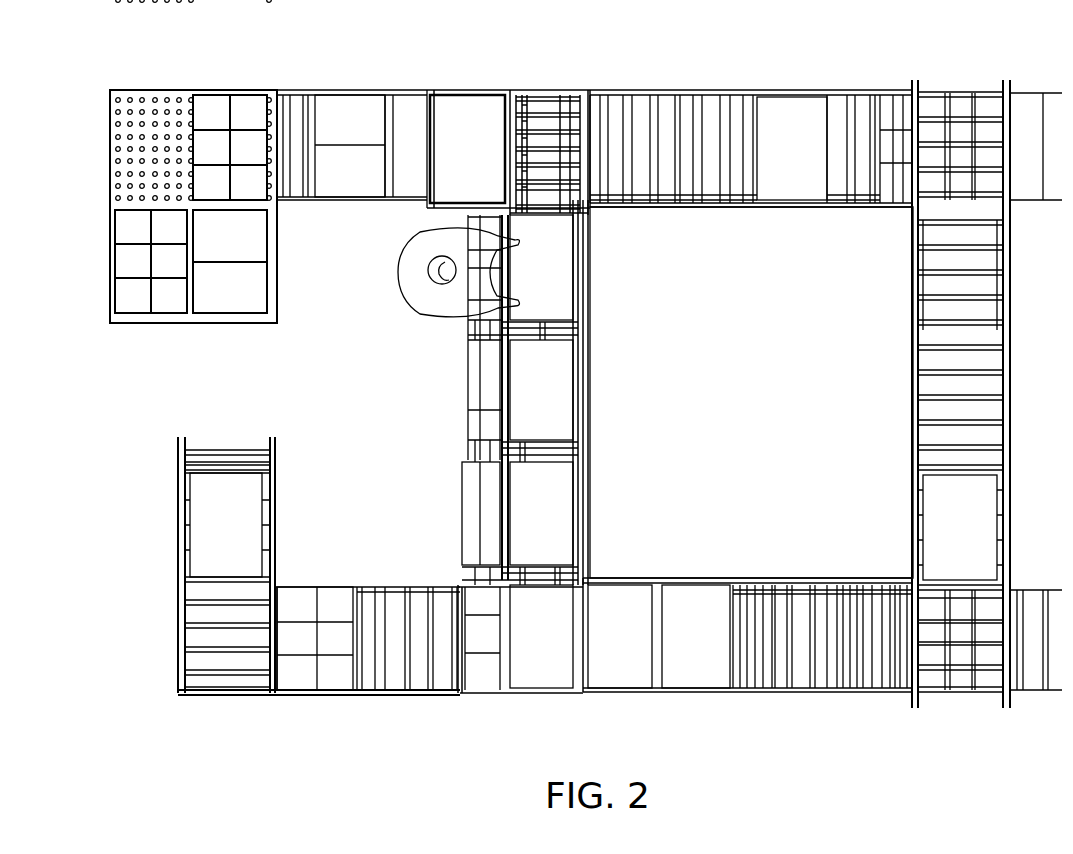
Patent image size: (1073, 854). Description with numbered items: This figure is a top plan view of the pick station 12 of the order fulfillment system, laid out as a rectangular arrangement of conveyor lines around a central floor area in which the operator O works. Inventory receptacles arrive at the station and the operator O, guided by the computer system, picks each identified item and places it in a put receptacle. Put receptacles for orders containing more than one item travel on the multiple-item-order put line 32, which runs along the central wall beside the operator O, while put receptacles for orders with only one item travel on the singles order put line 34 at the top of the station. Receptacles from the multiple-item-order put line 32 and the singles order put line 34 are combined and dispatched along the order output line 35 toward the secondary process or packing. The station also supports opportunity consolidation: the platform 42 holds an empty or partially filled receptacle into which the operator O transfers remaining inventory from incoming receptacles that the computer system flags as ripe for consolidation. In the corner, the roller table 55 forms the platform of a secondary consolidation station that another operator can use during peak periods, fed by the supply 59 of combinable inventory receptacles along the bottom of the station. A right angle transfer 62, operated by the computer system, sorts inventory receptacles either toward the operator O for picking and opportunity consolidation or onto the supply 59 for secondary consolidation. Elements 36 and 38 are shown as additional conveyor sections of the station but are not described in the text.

The pick station 12 is at (766, 396).
The multiple-item-order put line 32 is at (588, 380).
The singles order put line 34 is at (490, 92).
The order output line 35 is at (780, 92).
The right side ladder column 36 is at (1010, 88).
The bottom slatted wall section 38 is at (735, 585).
The platform 42 is at (395, 90).
The roller table 55 is at (152, 92).
The supply of combinable inventory receptacles 59 is at (385, 693).
The right angle transfer 62 is at (535, 693).
The operator O is at (432, 300).